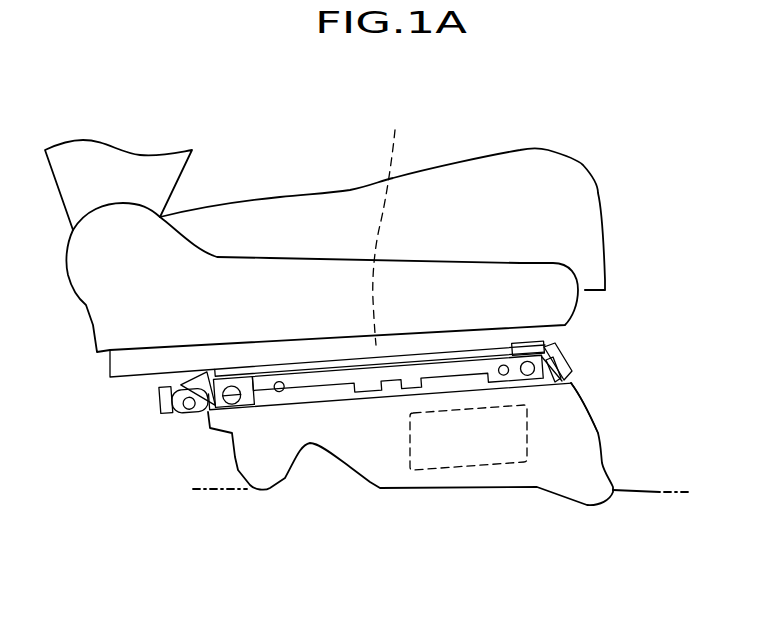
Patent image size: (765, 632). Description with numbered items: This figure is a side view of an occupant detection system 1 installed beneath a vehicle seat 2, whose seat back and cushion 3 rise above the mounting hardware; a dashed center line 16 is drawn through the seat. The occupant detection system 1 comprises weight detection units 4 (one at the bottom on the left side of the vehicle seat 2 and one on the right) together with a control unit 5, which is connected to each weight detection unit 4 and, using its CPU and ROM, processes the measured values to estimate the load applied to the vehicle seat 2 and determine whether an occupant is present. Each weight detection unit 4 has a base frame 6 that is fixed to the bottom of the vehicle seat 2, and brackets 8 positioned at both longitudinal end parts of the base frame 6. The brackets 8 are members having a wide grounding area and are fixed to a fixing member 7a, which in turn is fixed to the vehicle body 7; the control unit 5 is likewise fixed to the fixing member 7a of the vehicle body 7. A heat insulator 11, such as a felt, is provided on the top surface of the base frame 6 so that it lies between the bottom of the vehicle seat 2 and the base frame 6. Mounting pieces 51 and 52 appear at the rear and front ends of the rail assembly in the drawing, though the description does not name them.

The occupant detection system 1 is at (399, 455).
The vehicle seat 2 is at (590, 165).
The seat cushion 3 is at (570, 328).
The weight detection unit 4 is at (379, 374).
The control unit 5 is at (443, 545).
The base frame 6 is at (390, 388).
The vehicle body 7 is at (640, 492).
The fixing member 7a is at (560, 430).
The bracket 8 is at (575, 378).
The heat insulator 11 is at (612, 291).
The center line of seat 16 is at (389, 220).
The rear mounting bracket 51 is at (573, 350).
The front mounting bracket 52 is at (187, 392).